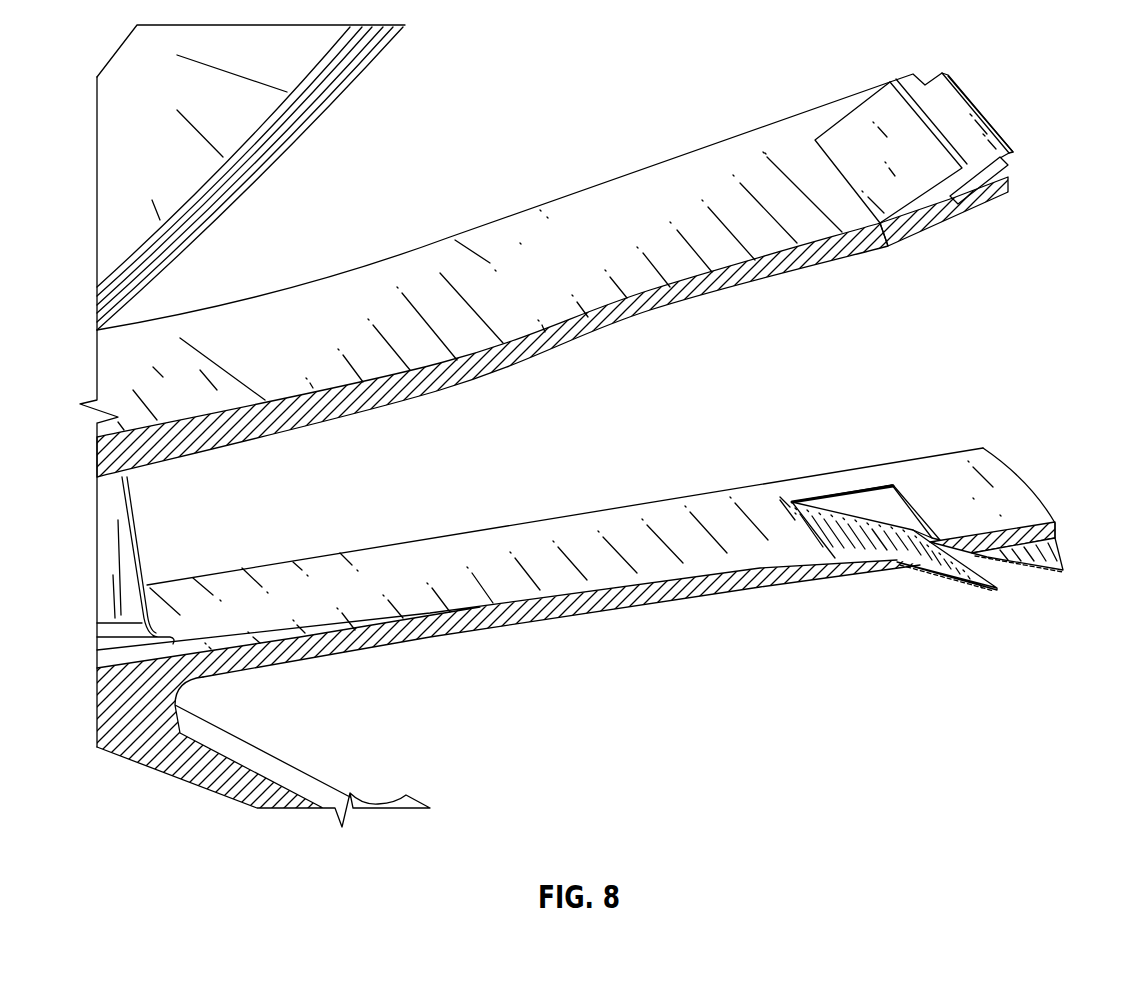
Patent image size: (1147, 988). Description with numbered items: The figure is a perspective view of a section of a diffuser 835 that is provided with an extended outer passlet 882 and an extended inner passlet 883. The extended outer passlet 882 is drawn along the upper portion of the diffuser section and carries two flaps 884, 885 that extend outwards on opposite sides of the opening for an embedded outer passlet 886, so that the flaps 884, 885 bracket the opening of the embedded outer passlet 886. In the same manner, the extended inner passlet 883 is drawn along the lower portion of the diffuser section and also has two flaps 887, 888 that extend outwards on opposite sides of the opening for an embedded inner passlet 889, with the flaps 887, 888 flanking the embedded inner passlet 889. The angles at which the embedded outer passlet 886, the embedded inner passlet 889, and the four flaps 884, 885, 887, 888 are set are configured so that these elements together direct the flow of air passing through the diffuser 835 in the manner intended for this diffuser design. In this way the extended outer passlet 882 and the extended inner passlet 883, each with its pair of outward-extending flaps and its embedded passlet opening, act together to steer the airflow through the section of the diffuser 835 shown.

The diffuser 835 is at (444, 170).
The extended outer passlet 882 is at (977, 96).
The extended inner passlet 883 is at (1012, 575).
The flap 884 is at (977, 157).
The flap 885 is at (843, 128).
The embedded outer passlet 886 is at (866, 263).
The flap 887 is at (923, 568).
The flap 888 is at (1050, 557).
The embedded inner passlet 889 is at (870, 504).